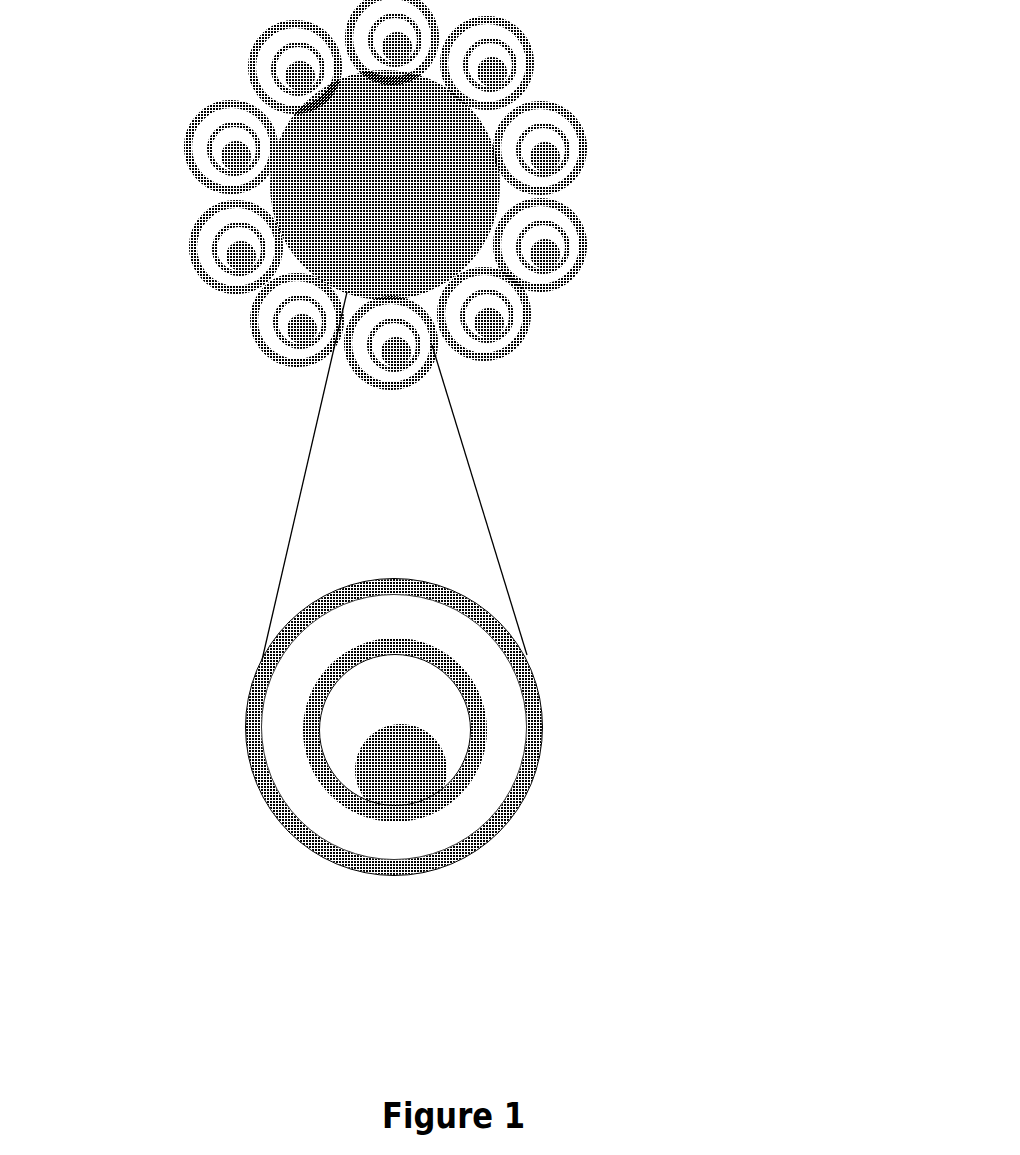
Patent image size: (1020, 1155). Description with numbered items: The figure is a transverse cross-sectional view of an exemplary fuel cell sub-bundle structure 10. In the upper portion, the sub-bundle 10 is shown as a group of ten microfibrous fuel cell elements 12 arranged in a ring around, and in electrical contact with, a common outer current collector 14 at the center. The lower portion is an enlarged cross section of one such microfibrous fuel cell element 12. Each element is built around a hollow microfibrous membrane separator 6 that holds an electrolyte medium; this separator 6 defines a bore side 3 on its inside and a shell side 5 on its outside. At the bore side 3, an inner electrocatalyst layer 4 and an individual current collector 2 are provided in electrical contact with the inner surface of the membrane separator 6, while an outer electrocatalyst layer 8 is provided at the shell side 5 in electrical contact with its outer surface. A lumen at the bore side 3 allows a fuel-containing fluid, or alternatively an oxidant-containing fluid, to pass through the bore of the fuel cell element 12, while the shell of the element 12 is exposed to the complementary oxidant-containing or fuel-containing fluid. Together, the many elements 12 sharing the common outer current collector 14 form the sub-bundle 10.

The individual current collector 2 is at (400, 770).
The bore side 3 is at (427, 708).
The inner electrocatalyst layer 4 is at (333, 782).
The shell side 5 is at (577, 728).
The hollow microfibrous membrane separator 6 is at (460, 817).
The outer electrocatalyst layer 8 is at (520, 782).
The fuel cell sub-bundle structure 10 is at (456, 193).
The microfibrous fuel cell element 12 is at (563, 138).
The common outer current collector 14 is at (388, 184).